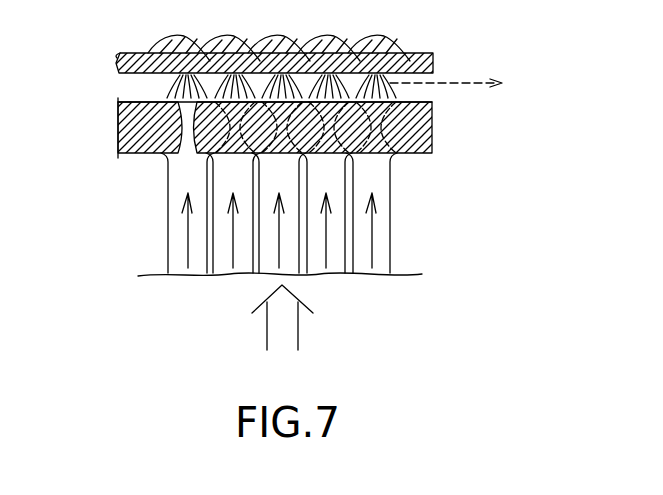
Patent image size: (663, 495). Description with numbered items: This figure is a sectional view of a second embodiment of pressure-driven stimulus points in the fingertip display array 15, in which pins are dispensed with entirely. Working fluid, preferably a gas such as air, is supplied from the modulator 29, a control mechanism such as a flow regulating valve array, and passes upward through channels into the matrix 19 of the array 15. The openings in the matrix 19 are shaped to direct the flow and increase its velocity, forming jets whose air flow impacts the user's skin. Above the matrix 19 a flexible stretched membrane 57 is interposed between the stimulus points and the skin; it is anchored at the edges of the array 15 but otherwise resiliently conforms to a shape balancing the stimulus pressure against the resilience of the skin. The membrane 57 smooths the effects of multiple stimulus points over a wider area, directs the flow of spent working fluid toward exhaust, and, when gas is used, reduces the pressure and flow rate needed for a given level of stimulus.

The flexible stretched membrane 57 is at (433, 54).
The matrix 19 is at (427, 125).
The fingertip display array 15 is at (112, 233).
The modulator 29 is at (292, 335).